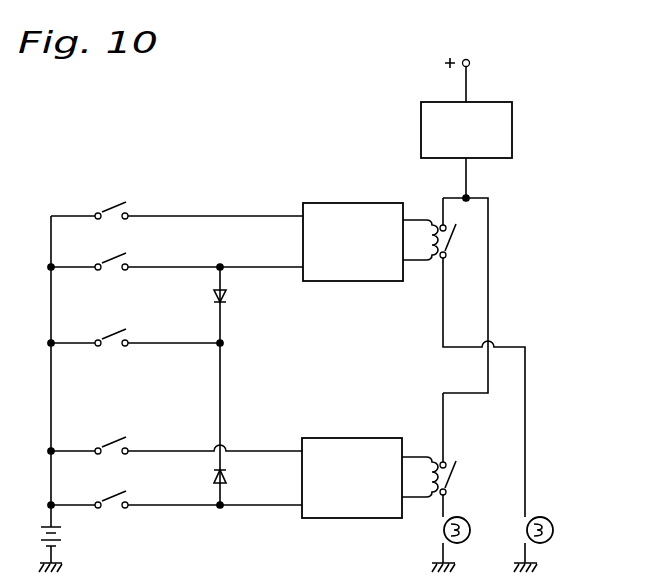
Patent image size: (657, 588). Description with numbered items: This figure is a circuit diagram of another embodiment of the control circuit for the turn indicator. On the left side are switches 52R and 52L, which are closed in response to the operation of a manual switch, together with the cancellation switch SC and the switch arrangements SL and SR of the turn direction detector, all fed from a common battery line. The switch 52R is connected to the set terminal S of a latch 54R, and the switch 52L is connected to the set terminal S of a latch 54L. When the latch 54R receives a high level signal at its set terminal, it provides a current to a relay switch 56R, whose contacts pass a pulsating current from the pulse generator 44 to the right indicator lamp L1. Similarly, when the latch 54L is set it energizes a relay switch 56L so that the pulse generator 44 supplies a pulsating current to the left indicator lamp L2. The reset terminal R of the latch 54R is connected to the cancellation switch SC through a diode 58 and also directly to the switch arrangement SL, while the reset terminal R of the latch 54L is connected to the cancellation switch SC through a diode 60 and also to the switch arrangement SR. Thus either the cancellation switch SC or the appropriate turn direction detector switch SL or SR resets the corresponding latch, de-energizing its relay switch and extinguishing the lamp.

The pulse generator 44 is at (512, 130).
The switch 52R is at (113, 200).
The switch 52L is at (113, 442).
The latch 54R is at (352, 207).
The latch 54L is at (353, 442).
The relay switch 56R is at (458, 240).
The relay switch 56L is at (450, 477).
The diode 58 is at (226, 296).
The diode 60 is at (227, 477).
The switch arrangement SL is at (112, 257).
The cancellation switch SC is at (116, 328).
The switch arrangement SR is at (112, 491).
The right indicator lamp L1 is at (557, 523).
The left indicator lamp L2 is at (472, 523).